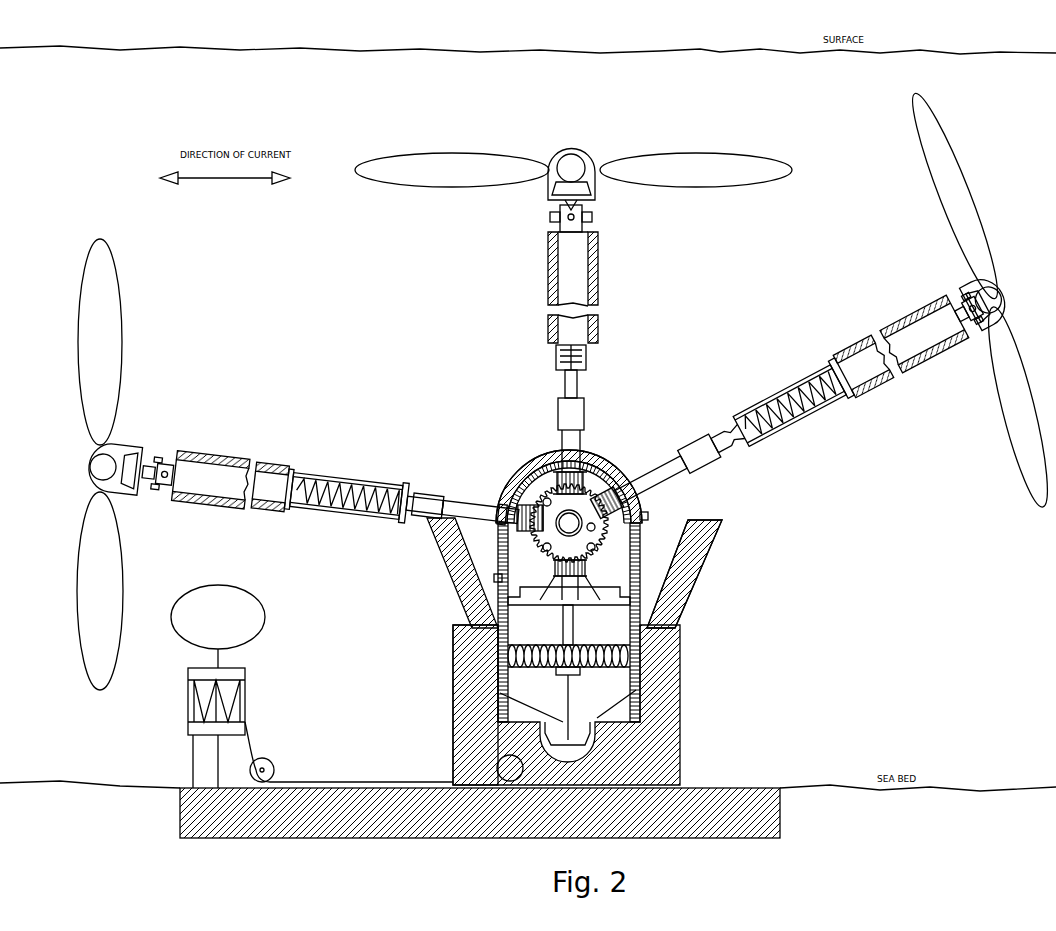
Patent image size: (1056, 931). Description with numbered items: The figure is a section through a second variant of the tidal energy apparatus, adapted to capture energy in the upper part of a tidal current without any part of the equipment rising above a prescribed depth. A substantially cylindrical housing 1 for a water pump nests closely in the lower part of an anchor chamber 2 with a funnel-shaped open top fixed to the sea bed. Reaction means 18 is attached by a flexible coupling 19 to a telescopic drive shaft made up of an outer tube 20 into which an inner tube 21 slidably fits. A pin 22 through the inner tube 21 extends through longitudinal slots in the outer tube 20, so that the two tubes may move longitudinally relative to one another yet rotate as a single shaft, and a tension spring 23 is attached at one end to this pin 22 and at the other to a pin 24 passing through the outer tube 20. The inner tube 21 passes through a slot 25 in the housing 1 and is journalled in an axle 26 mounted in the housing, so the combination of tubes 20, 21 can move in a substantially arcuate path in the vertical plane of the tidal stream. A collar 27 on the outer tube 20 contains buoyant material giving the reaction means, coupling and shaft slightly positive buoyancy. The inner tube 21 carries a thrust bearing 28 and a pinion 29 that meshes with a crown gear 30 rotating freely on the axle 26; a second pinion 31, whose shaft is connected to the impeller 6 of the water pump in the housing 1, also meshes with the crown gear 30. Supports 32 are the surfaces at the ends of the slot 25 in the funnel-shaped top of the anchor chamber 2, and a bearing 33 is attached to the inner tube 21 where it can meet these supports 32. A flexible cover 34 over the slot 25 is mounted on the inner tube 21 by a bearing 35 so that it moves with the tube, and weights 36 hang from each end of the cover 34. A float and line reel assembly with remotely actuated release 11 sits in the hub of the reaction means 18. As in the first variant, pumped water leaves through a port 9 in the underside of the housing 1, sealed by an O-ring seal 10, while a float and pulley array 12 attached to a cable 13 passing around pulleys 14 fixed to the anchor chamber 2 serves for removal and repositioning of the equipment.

The housing 1 is at (632, 553).
The anchor chamber 2 is at (683, 598).
The impeller 6 is at (454, 657).
The port 9 is at (455, 685).
The seal of 'O'-ring type 10 is at (680, 652).
The float and line reel assembly with remotely actuated release 11 is at (99, 461).
The float and pulley array 12 is at (250, 690).
The cable 13 is at (415, 782).
The pulleys 14 is at (455, 726).
The reaction means 18 is at (100, 577).
The flexible coupling 19 is at (160, 454).
The outer tube 20 is at (343, 524).
The inner tube 21 is at (464, 493).
The pin 22 is at (382, 530).
The tension spring 23 is at (349, 481).
The pin 24 is at (293, 489).
The slot 25 is at (548, 455).
The axle 26 is at (535, 473).
The collar 27 is at (233, 467).
The thrust bearing 28 is at (612, 537).
The pinion 29 is at (513, 492).
The crown gear 30 is at (613, 458).
The second pinion 31 is at (547, 609).
The supports 32 is at (436, 528).
The bearing 33 is at (424, 485).
The flexible cover 34 is at (588, 452).
The bearing 35 is at (490, 507).
The weights 36 is at (494, 578).